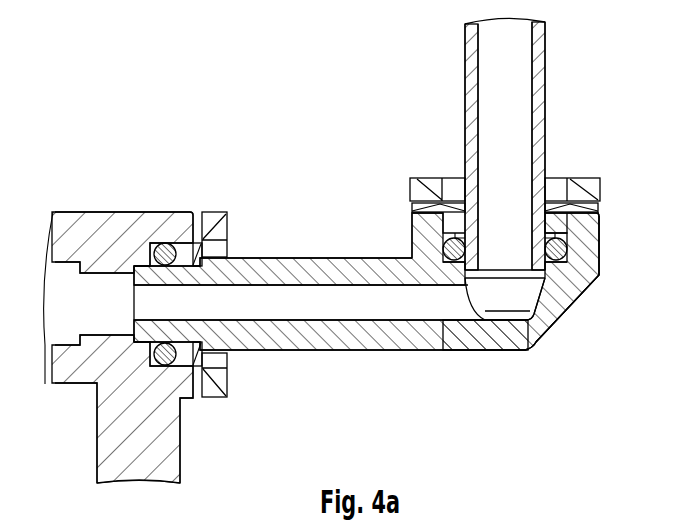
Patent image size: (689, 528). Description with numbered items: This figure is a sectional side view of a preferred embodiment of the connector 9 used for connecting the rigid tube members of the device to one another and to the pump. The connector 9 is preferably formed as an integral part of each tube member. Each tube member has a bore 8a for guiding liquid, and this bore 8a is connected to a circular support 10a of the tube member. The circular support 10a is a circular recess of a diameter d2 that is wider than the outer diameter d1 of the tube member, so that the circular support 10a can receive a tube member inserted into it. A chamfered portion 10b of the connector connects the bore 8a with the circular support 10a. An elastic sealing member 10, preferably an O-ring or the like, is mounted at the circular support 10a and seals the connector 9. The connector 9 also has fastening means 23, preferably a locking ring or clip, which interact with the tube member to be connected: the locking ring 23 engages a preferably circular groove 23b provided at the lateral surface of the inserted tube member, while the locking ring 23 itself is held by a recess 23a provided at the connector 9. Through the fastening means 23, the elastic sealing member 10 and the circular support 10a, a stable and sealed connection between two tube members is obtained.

The bore 8a is at (360, 303).
The connector 9 is at (177, 223).
The elastic sealing member 10 is at (143, 260).
The circular support 10a is at (593, 273).
The chamfered portion 10b is at (576, 310).
The fastening means 23 is at (218, 242).
The recess 23a is at (419, 205).
The circular groove 23b is at (551, 205).
The outer diameter of the tube member d1 is at (573, 70).
The diameter of the circular support d2 is at (443, 255).